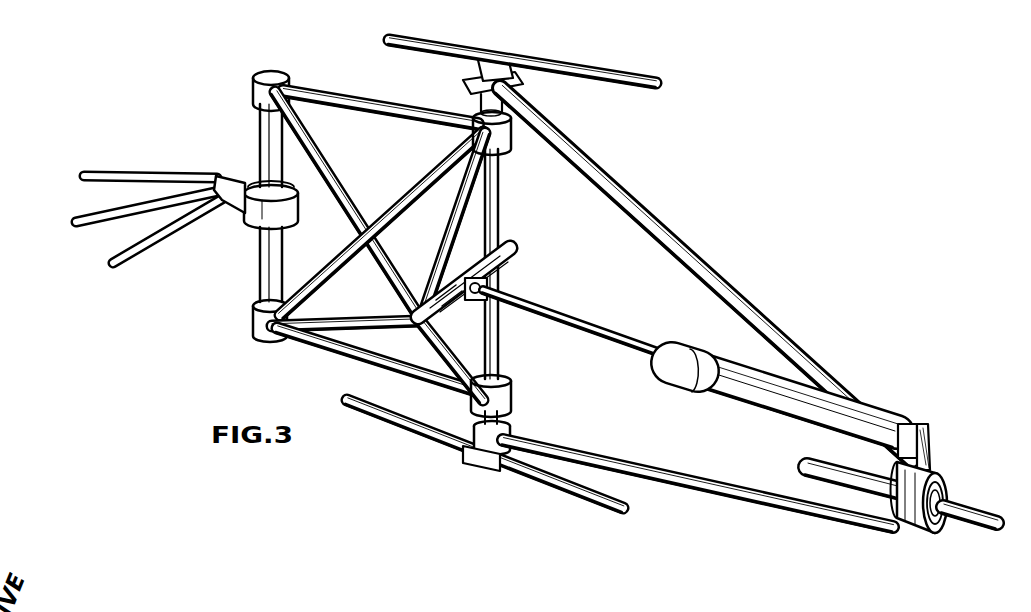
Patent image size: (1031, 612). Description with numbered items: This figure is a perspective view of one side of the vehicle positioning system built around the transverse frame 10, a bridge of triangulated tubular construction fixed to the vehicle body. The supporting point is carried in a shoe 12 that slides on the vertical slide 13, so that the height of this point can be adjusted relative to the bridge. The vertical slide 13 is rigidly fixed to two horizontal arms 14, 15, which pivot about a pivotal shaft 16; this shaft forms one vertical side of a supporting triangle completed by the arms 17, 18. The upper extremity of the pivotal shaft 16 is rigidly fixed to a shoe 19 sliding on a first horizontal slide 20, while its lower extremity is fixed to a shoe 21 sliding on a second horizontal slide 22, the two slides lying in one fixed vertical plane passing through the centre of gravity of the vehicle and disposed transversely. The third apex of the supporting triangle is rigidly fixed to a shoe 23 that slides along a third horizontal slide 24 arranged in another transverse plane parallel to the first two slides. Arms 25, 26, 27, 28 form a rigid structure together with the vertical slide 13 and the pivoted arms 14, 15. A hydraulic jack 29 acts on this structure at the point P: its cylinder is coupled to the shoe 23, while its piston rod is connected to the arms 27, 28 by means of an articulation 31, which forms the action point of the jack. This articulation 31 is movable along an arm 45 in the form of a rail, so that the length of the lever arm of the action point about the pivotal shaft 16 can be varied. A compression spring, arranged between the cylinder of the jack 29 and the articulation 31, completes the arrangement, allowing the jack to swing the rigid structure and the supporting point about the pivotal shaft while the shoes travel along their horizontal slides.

The transverse frame 10 is at (213, 179).
The shoe 12 is at (262, 215).
The vertical slide 13 is at (258, 131).
The horizontal arm 14 is at (387, 104).
The horizontal arm 15 is at (325, 340).
The pivotal shaft 16 is at (500, 200).
The arm of supporting triangle 17 is at (717, 282).
The arm of supporting triangle 18 is at (715, 488).
The shoe 19 is at (496, 58).
The first horizontal slide 20 is at (622, 75).
The shoe 21 is at (472, 463).
The second horizontal slide 22 is at (558, 485).
The shoe 23 is at (910, 522).
The third horizontal slide 24 is at (968, 527).
The arm 25 is at (338, 182).
The arm 26 is at (365, 317).
The arm 27 is at (443, 240).
The arm 28 is at (458, 357).
The hydraulic jack 29 is at (710, 393).
The articulation 31 is at (500, 273).
The arm in the form of a rail 45 is at (505, 243).